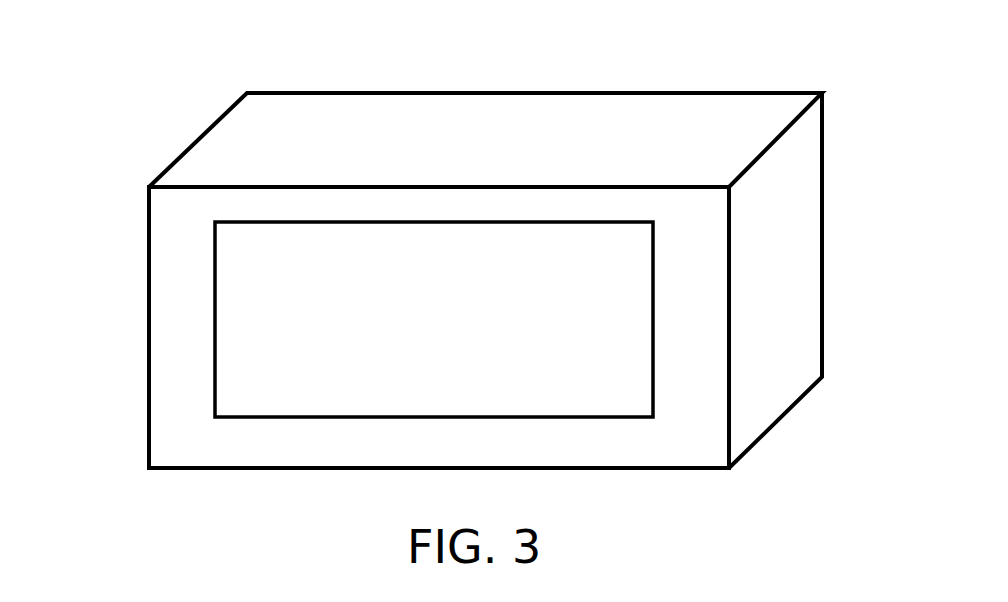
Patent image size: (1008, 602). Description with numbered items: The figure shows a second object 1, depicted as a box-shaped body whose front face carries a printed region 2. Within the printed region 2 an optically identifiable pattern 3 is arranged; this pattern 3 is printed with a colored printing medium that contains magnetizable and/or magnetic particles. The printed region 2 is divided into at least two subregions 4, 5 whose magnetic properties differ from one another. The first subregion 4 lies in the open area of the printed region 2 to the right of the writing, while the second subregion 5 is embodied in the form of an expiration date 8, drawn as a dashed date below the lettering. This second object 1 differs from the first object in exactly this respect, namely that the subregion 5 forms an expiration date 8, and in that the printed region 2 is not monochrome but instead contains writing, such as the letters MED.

The object 1 is at (669, 93).
The printed region 2 is at (637, 356).
The pattern 3 is at (316, 335).
The subregion 4 is at (445, 265).
The subregion 5 is at (603, 392).
The expiration date 8 is at (243, 357).